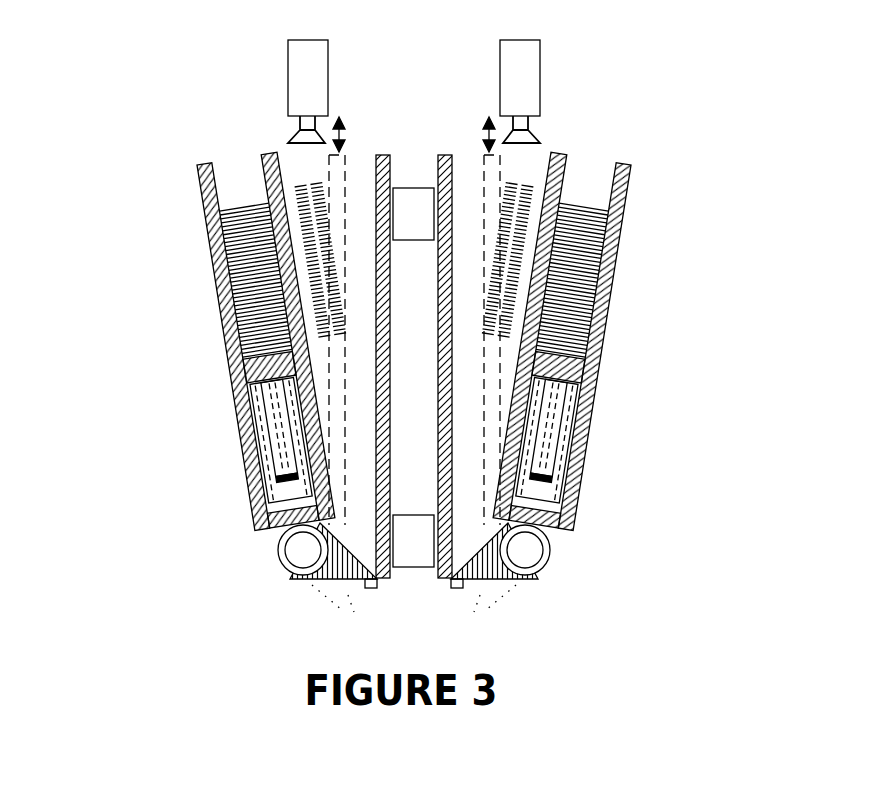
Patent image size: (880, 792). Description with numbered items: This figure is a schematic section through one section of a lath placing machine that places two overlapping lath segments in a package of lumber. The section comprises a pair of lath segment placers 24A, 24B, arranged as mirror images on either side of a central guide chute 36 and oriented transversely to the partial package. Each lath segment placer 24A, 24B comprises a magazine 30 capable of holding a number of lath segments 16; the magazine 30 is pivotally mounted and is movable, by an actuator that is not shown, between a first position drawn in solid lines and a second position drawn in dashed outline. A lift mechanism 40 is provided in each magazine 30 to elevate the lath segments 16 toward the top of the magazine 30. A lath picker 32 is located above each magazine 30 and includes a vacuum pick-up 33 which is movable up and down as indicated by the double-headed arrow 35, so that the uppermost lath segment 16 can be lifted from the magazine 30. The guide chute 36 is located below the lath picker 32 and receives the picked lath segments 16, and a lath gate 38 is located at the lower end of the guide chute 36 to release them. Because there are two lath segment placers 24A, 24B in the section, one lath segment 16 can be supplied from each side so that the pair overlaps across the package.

The lath segment placer 24A is at (147, 145).
The lath segment placer 24B is at (684, 146).
The magazine 30 is at (204, 218).
The lath segments 16 is at (217, 277).
The lift mechanism 40 is at (233, 374).
The lath picker 32 is at (288, 82).
The vacuum pick-up 33 is at (290, 141).
The arrow 35 is at (346, 130).
The guide chute 36 is at (365, 150).
The lath gate 38 is at (365, 588).